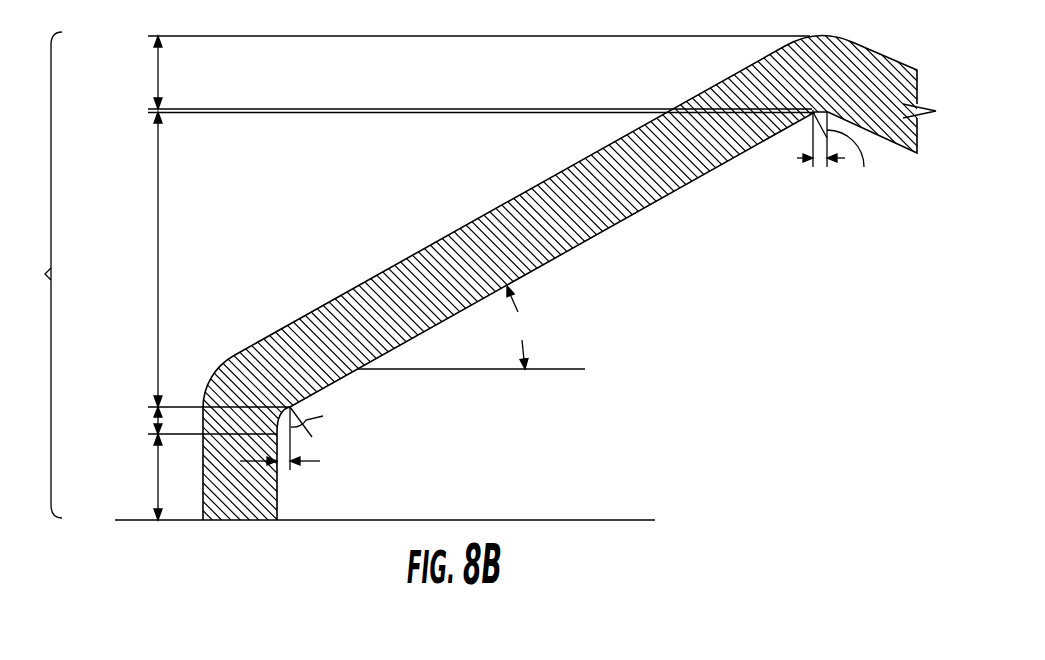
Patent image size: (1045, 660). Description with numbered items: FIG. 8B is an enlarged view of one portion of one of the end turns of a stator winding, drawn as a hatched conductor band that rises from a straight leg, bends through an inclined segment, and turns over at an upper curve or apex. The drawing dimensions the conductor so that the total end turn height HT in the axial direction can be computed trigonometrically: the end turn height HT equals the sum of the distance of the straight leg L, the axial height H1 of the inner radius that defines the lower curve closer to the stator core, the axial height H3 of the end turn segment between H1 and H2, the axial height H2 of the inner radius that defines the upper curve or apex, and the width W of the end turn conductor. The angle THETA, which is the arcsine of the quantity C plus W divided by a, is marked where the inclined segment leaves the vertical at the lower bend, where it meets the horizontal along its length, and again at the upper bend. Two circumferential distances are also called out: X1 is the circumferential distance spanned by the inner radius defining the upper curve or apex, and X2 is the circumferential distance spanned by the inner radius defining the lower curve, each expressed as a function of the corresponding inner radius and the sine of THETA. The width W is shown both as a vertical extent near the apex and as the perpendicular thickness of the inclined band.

The width of each end turn conductor W is at (158, 72).
The axial height of the inner radius that defines the upper curve/apex of the end tu H2 is at (467, 111).
The axial height of the end turn segment between H1 and H2 H3 is at (158, 268).
The end turn height HT is at (40, 275).
The axial height of the inner radius that defines the lower curve of the end turn cl H1 is at (158, 421).
The distance of the straight leg L is at (158, 475).
The circumferential distance spanned by the inner radius that defines the upper curv X1 is at (318, 461).
The circumferential distance spanned by the inner radius that defines the lower curv X2 is at (797, 158).
The theta THETA is at (593, 274).